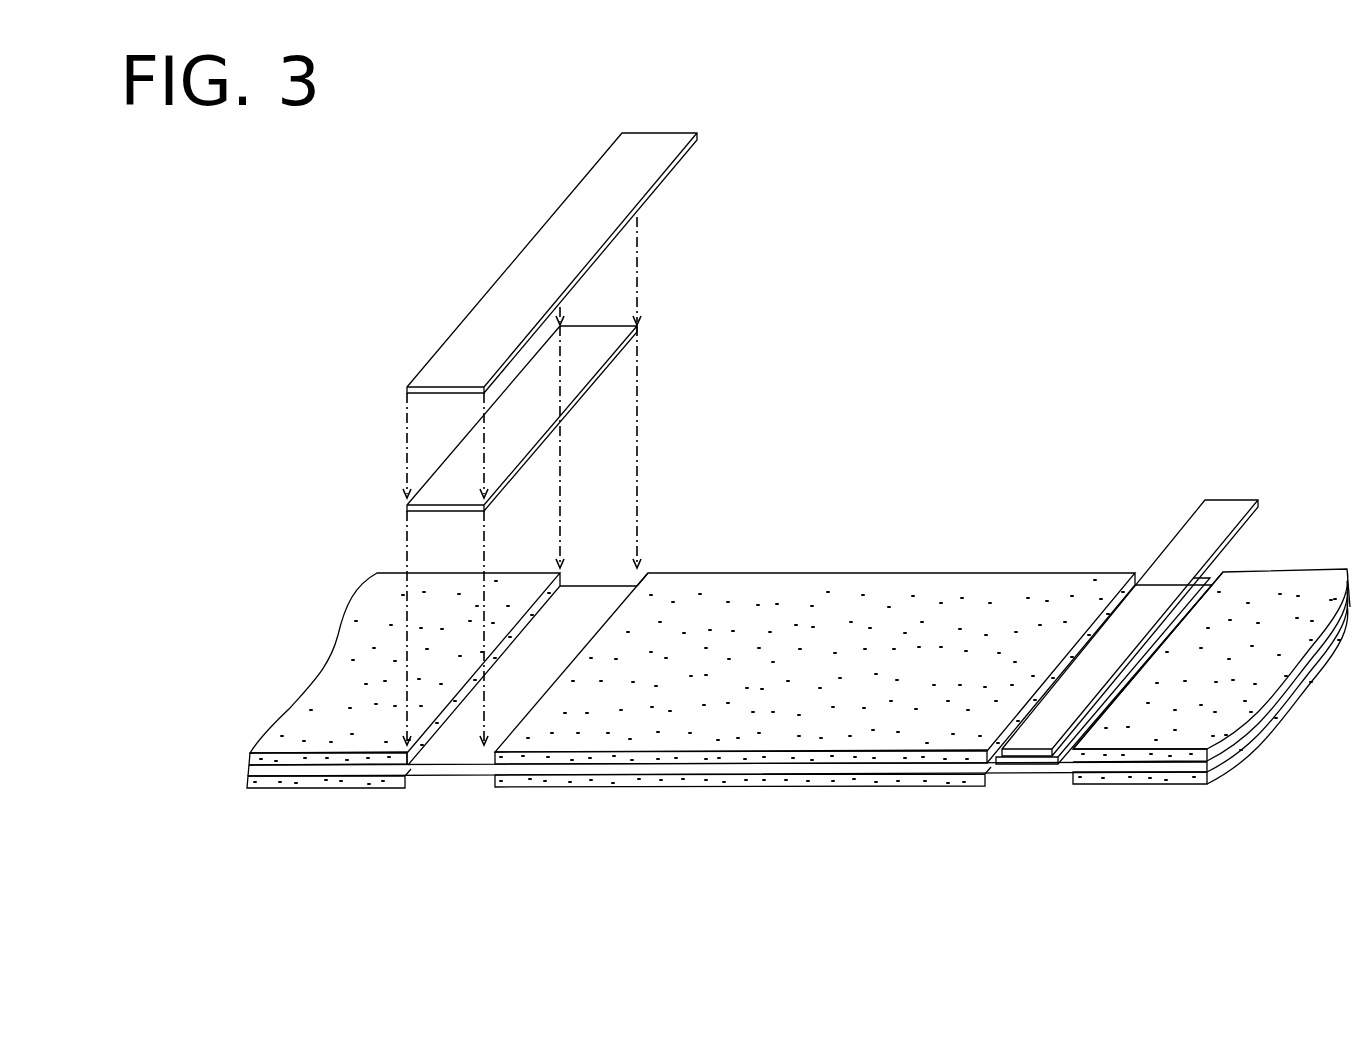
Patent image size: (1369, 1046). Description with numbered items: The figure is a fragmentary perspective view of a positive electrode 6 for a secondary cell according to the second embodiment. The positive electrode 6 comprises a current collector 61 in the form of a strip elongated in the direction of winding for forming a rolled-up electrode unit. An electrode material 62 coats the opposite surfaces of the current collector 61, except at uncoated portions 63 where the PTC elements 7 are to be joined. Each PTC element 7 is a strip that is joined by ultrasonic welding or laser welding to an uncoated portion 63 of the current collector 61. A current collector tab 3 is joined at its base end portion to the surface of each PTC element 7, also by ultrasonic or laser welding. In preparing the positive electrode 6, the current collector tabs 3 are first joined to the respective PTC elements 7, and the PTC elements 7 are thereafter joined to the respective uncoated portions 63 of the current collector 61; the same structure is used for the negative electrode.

The current collector tab 3 is at (540, 245).
The PTC element 7 is at (595, 362).
The positive electrode 6 is at (805, 578).
The current collector 61 is at (695, 770).
The electrode material 62 is at (347, 620).
The uncoated portion 63 is at (588, 598).